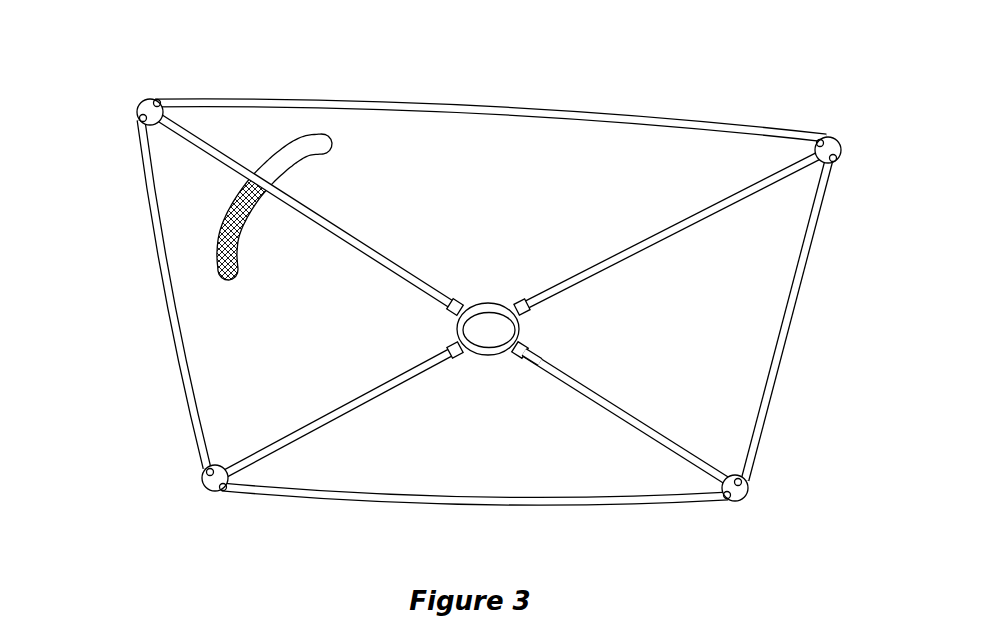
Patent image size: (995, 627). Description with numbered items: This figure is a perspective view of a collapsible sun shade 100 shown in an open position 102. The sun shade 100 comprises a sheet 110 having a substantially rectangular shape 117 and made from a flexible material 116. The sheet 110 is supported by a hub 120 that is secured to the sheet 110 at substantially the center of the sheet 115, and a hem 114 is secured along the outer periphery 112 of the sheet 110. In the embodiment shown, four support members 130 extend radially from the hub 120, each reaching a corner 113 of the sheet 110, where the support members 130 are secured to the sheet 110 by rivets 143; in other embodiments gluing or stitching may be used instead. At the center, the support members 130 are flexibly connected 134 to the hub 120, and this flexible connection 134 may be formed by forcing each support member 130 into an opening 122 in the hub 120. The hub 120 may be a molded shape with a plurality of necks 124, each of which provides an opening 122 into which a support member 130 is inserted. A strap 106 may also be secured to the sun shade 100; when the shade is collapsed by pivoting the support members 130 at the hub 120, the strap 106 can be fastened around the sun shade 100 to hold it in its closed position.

The sun shade 100 is at (131, 244).
The open position 102 is at (219, 344).
The strap 106 is at (286, 210).
The sheet 110 is at (481, 189).
The outer periphery 112 is at (490, 101).
The corner 113 is at (861, 131).
The hem 114 is at (485, 290).
The center of the sheet 115 is at (546, 342).
The flexible material 116 is at (748, 246).
The substantially rectangular shape 117 is at (699, 406).
The hub 120 is at (507, 343).
The opening 122 is at (492, 387).
The neck 124 is at (478, 370).
The support member 130 is at (626, 417).
The flexible connection 134 is at (485, 288).
The rivet 143 is at (114, 88).